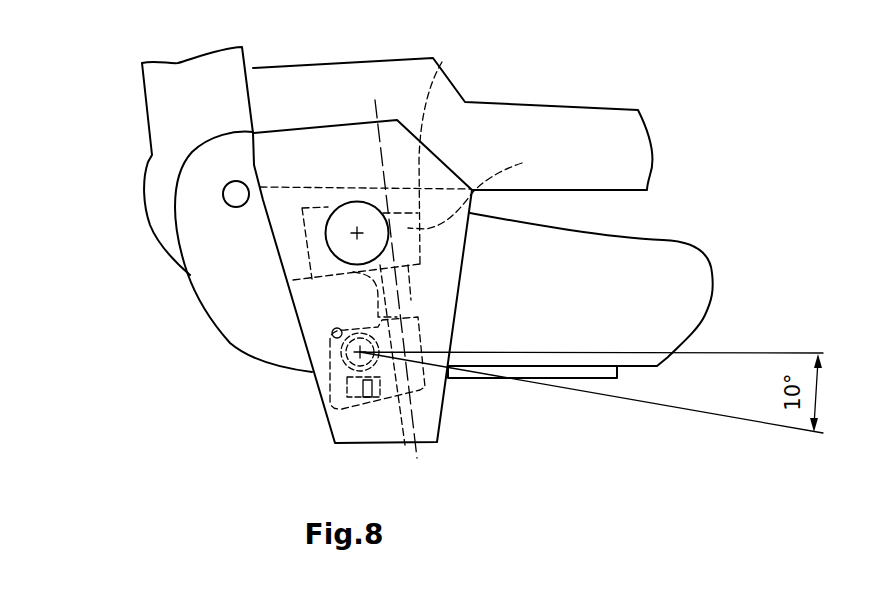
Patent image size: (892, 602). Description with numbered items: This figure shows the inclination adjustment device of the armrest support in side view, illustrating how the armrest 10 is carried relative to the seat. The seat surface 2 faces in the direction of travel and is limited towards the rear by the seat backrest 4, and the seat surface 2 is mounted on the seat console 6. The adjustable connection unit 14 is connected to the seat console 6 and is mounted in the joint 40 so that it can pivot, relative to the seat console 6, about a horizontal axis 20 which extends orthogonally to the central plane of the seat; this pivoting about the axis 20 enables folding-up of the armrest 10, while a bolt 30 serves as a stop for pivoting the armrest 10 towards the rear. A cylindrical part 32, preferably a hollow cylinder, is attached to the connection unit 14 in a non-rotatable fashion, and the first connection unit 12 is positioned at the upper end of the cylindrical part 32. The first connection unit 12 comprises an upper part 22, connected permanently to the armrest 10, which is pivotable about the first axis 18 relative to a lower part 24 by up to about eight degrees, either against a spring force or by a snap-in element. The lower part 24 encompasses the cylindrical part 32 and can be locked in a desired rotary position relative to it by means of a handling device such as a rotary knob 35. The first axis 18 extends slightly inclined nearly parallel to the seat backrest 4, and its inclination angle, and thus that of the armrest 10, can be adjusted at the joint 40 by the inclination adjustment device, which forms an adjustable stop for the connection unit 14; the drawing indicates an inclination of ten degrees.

The seat surface 2 is at (676, 204).
The seat backrest 4 is at (172, 100).
The seat console 6 is at (573, 370).
The armrest 10 is at (596, 160).
The first connection unit 12 is at (432, 207).
The connection unit 14 is at (402, 380).
The first axis 18 is at (413, 448).
The horizontal axis 20 is at (341, 356).
The upper part 22 is at (380, 174).
The lower part 24 is at (480, 186).
The bolt 30 is at (332, 333).
The cylindrical part 32 is at (408, 296).
The rotary knob 35 is at (355, 234).
The joint 40 is at (366, 392).